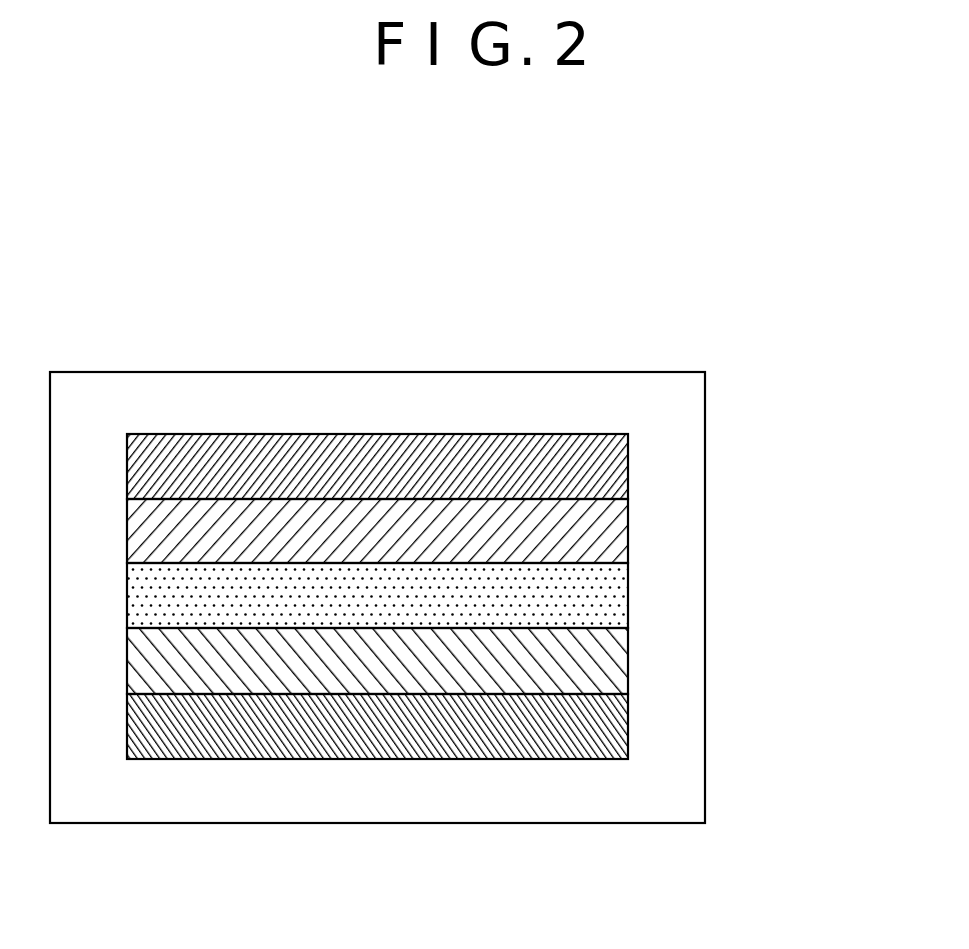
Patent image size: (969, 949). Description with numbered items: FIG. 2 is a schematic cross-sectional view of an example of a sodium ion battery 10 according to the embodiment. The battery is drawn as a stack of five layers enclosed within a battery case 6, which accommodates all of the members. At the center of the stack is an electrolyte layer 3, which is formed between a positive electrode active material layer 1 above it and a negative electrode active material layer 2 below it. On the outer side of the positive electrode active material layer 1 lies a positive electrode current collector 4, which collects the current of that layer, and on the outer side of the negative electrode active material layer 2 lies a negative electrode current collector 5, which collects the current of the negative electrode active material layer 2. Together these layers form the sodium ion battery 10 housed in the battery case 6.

The sodium ion battery 10 is at (458, 519).
The battery case 6 is at (660, 396).
The positive electrode current collector 4 is at (603, 467).
The positive electrode active material layer 1 is at (592, 532).
The electrolyte layer 3 is at (600, 595).
The negative electrode active material layer 2 is at (598, 662).
The negative electrode current collector 5 is at (598, 727).